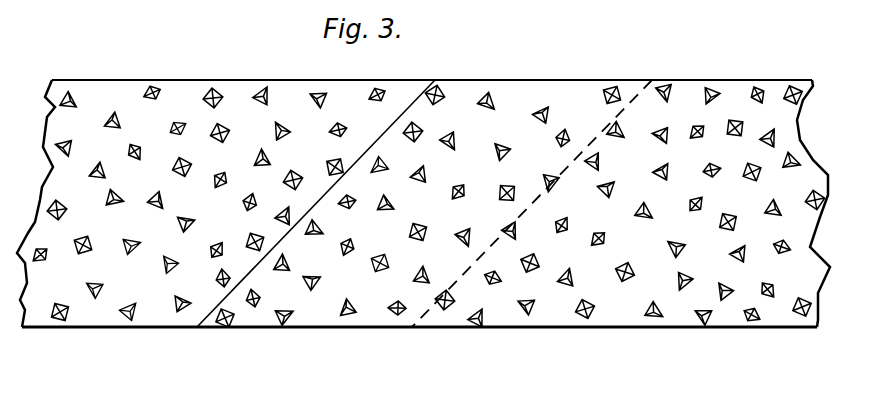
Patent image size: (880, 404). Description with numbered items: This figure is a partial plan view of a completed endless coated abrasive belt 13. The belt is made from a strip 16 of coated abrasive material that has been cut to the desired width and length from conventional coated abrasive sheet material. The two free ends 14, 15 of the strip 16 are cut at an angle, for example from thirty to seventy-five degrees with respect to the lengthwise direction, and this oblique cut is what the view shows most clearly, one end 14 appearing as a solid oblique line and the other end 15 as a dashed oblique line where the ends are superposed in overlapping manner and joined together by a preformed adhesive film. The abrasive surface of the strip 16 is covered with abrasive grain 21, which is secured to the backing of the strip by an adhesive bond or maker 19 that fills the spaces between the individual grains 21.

The endless coated abrasive belt 13 is at (490, 77).
The free end 14 is at (407, 107).
The free end 15 is at (462, 278).
The strip of coated abrasive material 16 is at (83, 79).
The adhesive bond or maker 19 is at (178, 108).
The abrasive grain 21 is at (167, 268).